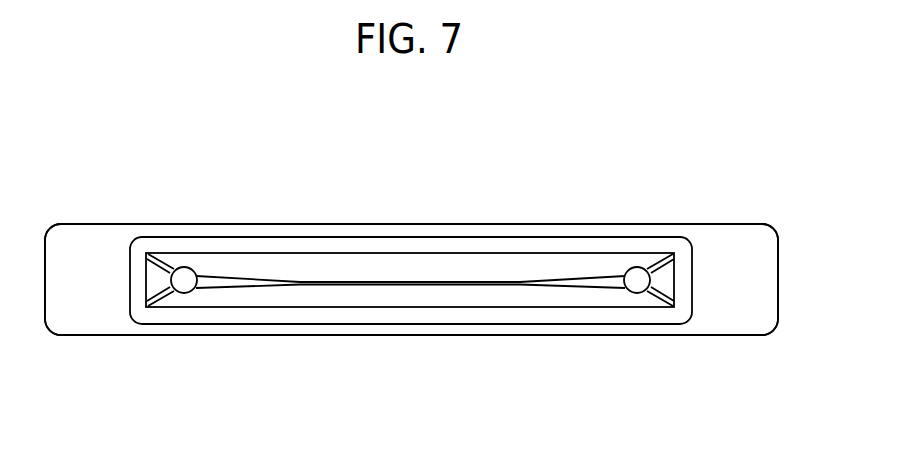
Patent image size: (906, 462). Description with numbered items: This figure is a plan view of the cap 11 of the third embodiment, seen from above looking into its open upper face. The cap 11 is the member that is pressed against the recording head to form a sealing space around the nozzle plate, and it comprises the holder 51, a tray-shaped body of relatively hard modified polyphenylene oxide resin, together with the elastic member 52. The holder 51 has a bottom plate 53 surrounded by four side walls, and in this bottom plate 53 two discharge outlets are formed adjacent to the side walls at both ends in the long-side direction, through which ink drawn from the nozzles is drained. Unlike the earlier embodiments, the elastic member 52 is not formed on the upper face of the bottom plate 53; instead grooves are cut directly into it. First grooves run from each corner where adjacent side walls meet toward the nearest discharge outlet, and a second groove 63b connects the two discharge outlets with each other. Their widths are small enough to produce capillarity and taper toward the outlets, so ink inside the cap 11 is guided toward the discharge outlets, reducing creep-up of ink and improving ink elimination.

The cap 11 is at (746, 206).
The holder 51 is at (102, 240).
The elastic member 52 is at (363, 244).
The bottom plate 53 is at (498, 296).
The second groove 63b is at (430, 281).